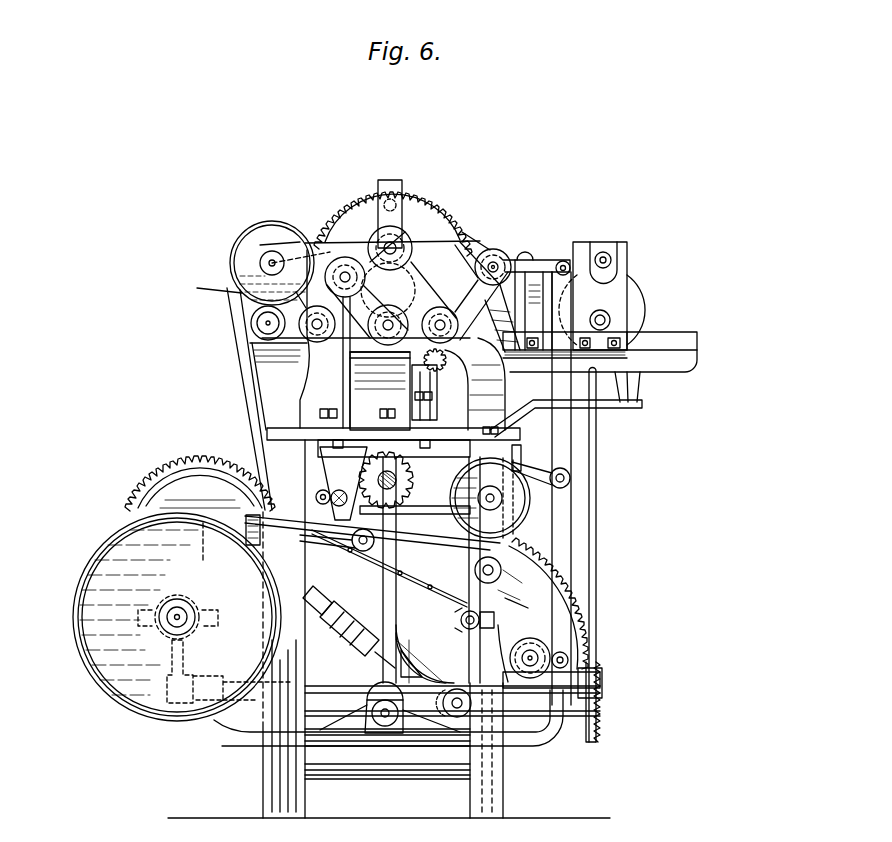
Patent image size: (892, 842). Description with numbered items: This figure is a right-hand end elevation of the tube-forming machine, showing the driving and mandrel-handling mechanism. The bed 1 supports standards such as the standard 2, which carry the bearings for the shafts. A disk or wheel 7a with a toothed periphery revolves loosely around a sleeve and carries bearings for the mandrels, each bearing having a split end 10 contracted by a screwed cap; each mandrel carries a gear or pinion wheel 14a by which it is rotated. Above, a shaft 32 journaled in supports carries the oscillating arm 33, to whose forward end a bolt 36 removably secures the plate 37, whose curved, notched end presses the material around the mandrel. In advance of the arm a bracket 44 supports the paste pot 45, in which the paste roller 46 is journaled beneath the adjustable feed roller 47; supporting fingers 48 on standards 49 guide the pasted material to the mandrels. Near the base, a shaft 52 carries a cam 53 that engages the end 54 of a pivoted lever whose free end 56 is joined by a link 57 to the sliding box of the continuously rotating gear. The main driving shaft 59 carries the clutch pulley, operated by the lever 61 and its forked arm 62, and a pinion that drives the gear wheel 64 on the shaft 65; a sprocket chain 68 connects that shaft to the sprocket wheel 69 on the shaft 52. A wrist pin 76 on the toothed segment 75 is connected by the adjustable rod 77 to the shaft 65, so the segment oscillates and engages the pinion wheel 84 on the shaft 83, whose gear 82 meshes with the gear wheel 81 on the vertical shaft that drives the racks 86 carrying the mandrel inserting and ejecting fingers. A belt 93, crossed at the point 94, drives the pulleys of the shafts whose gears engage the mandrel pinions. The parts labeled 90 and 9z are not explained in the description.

The bed 1 is at (293, 806).
The standard 2 is at (288, 377).
The disk or wheel 7a is at (340, 228).
The split end 10 is at (378, 290).
The bracket and pulley 90 is at (402, 228).
The guide pulleys 9z is at (407, 228).
The plate 37 is at (453, 222).
The bolt 36 is at (461, 228).
The oscillating plate or arm 33 is at (466, 230).
The shaft 32 is at (498, 250).
The link 57 is at (542, 266).
The supporting fingers 48 is at (549, 263).
The free end of lever 56 is at (560, 262).
The feed roller 47 is at (603, 248).
The standards 49 is at (537, 297).
The paste roller 46 is at (633, 312).
The glue or paste pot 45 is at (690, 343).
The bracket 44 is at (633, 404).
The belt 93 is at (230, 291).
The operating lever 61 is at (593, 497).
The rack 86 is at (412, 407).
The gear or pinion wheel 14a is at (410, 360).
The shaft 83 is at (341, 483).
The pinion wheel 84 is at (412, 478).
The gear 82 is at (470, 500).
The crossing point of belt 94 is at (262, 505).
The gear wheel 64 is at (157, 486).
The shaft 65 is at (177, 617).
The main driving shaft 59 is at (168, 627).
The forked arm 62 is at (175, 660).
The gear wheel 81 is at (420, 527).
The sprocket chain 68 is at (461, 619).
The adjustable rod 77 is at (340, 585).
The toothed segment 75 is at (394, 664).
The sprocket wheel 69 is at (528, 608).
The shaft 52 is at (535, 655).
The end of lever 54 is at (565, 657).
The cam 53 is at (575, 678).
The wrist pin 76 is at (457, 712).